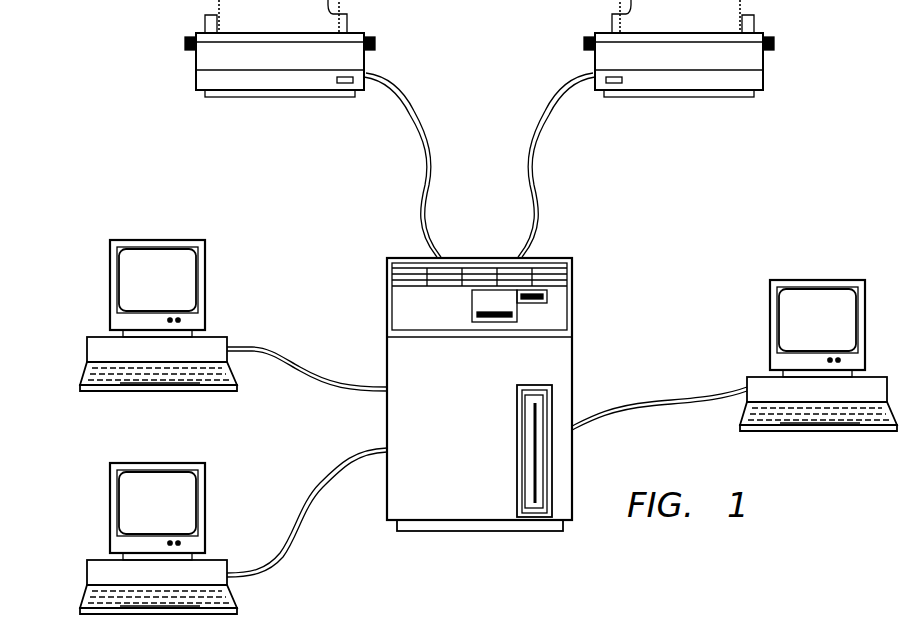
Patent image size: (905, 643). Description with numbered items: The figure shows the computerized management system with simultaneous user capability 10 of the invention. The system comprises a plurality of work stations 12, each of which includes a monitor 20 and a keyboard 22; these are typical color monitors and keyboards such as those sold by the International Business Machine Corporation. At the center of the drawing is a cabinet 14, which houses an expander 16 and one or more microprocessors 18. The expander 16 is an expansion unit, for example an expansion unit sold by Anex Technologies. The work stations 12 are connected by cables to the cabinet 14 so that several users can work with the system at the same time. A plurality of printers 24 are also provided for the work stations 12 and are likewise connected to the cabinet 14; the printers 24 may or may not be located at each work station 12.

The computerized management system with simultaneous user capability 10 is at (482, 99).
The work station 12 is at (468, 430).
The cabinet 14 is at (444, 538).
The expander 16 is at (405, 419).
The microprocessor 18 is at (482, 423).
The monitor 20 is at (201, 283).
The keyboard 22 is at (191, 386).
The printer 24 is at (194, 26).